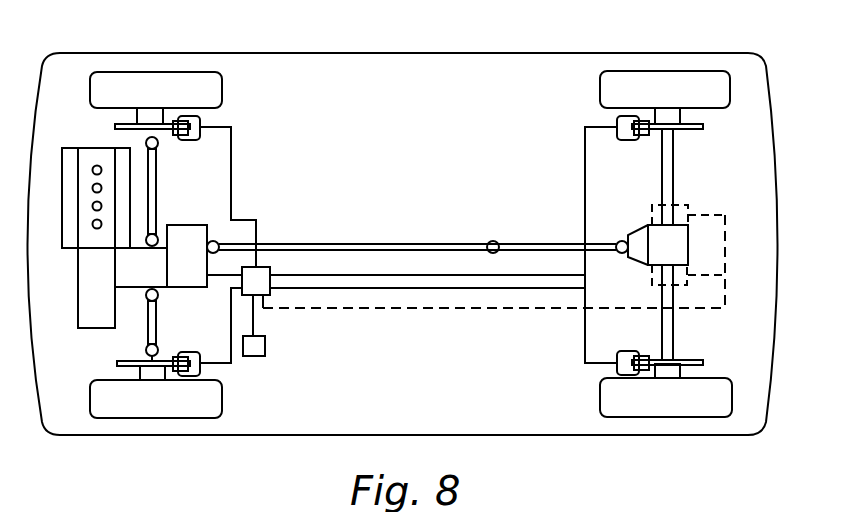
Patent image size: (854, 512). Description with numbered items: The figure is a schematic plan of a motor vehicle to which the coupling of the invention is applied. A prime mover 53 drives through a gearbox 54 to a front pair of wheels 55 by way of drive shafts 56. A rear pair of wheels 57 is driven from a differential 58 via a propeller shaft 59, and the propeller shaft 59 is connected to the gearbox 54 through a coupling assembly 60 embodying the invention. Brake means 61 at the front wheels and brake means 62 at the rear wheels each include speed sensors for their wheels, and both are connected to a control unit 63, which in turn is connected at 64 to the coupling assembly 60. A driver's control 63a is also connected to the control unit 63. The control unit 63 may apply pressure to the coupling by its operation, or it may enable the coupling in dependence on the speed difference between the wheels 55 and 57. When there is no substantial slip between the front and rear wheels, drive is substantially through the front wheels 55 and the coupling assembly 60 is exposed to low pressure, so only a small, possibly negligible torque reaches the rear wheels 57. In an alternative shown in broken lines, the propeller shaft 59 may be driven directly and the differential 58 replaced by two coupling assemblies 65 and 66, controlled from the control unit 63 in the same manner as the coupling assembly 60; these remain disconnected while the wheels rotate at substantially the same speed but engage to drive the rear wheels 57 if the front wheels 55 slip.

The prime mover 53 is at (72, 222).
The gearbox 54 is at (92, 307).
The front pair of wheels 55 is at (172, 83).
The drive shafts 56 is at (157, 170).
The rear pair of wheels 57 is at (662, 82).
The differential 58 is at (677, 247).
The propeller shaft 59 is at (417, 243).
The coupling assembly 60 is at (188, 234).
The brake means 61 is at (203, 118).
The brake means 62 is at (617, 122).
The control unit 63 is at (257, 280).
The driver's control 63a is at (266, 345).
The connection 64 is at (222, 277).
The coupling assembly 65 is at (652, 210).
The coupling assembly 66 is at (652, 275).